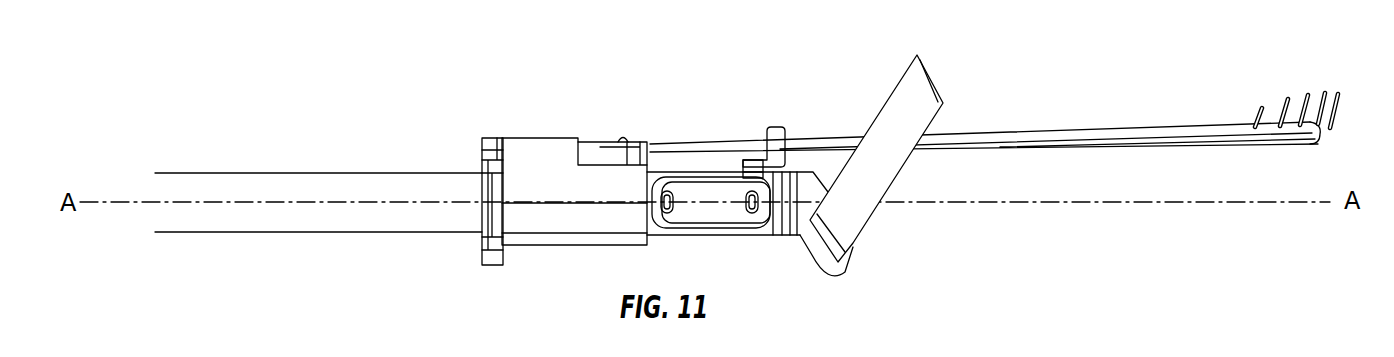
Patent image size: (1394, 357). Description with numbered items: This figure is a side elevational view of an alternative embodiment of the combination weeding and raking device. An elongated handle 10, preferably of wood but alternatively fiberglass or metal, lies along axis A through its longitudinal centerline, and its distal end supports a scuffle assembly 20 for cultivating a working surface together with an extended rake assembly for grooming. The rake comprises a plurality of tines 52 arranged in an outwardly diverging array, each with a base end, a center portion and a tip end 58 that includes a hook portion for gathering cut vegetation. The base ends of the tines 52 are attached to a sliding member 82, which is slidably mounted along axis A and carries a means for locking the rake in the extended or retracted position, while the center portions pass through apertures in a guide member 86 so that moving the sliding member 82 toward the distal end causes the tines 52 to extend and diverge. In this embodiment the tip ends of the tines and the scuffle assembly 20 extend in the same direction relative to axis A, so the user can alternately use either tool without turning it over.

The elongated handle 10 is at (258, 173).
The sliding member 82 is at (553, 137).
The guide member 86 is at (775, 127).
The scuffle assembly 20 is at (867, 217).
The tines 52 is at (1140, 145).
The tip end 58 is at (1320, 97).